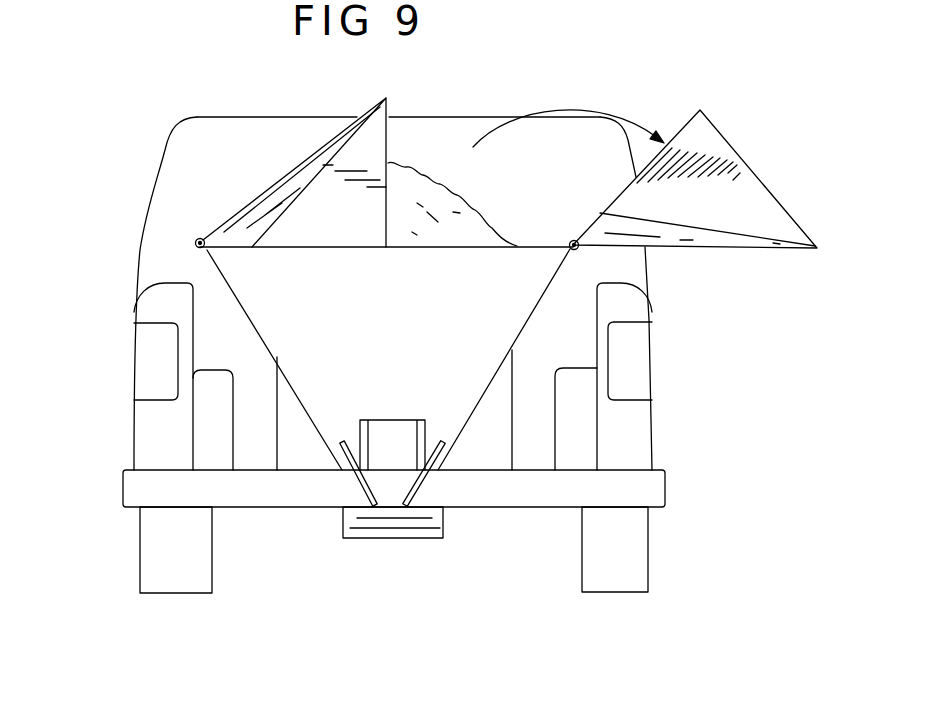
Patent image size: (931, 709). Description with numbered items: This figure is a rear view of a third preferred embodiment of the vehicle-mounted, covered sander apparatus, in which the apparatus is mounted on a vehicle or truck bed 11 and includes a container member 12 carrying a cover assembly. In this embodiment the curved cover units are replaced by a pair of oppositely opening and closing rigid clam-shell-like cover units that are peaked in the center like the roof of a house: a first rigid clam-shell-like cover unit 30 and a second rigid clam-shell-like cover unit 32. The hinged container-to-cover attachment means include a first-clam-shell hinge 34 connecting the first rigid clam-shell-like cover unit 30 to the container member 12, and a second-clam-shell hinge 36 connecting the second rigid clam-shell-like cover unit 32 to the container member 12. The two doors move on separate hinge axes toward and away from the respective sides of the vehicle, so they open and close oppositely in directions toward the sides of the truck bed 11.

The vehicle or truck bed 11 is at (630, 440).
The container member 12 is at (317, 300).
The first rigid clam-shell-like cover unit 30 is at (345, 193).
The second rigid clam-shell-like cover unit 32 is at (746, 163).
The first-clam-shell hinge 34 is at (192, 248).
The second-clam-shell hinge 36 is at (578, 248).